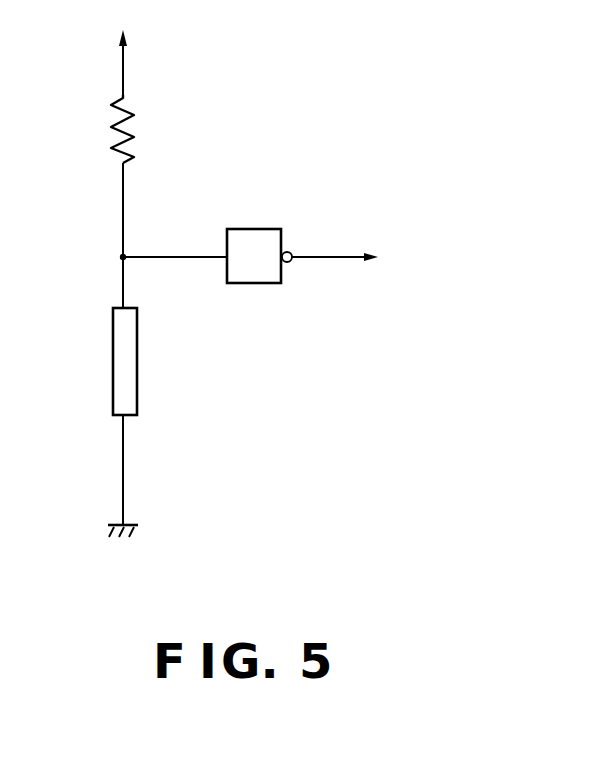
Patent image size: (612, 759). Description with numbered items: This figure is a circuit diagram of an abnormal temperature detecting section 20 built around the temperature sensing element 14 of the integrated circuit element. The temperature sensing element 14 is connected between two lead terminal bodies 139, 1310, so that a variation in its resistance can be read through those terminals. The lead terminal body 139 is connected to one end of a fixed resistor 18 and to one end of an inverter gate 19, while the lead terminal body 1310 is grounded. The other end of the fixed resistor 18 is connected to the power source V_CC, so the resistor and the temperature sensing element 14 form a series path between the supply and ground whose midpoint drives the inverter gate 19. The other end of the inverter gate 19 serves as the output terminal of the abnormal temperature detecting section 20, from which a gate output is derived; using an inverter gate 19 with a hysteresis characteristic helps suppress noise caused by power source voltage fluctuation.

The abnormal temperature detecting section 20 is at (318, 104).
The fixed resistor 18 is at (135, 130).
The lead terminal body 139 is at (122, 258).
The inverter gate 19 is at (254, 229).
The temperature sensing element 14 is at (138, 360).
The lead terminal body 1310 is at (124, 463).